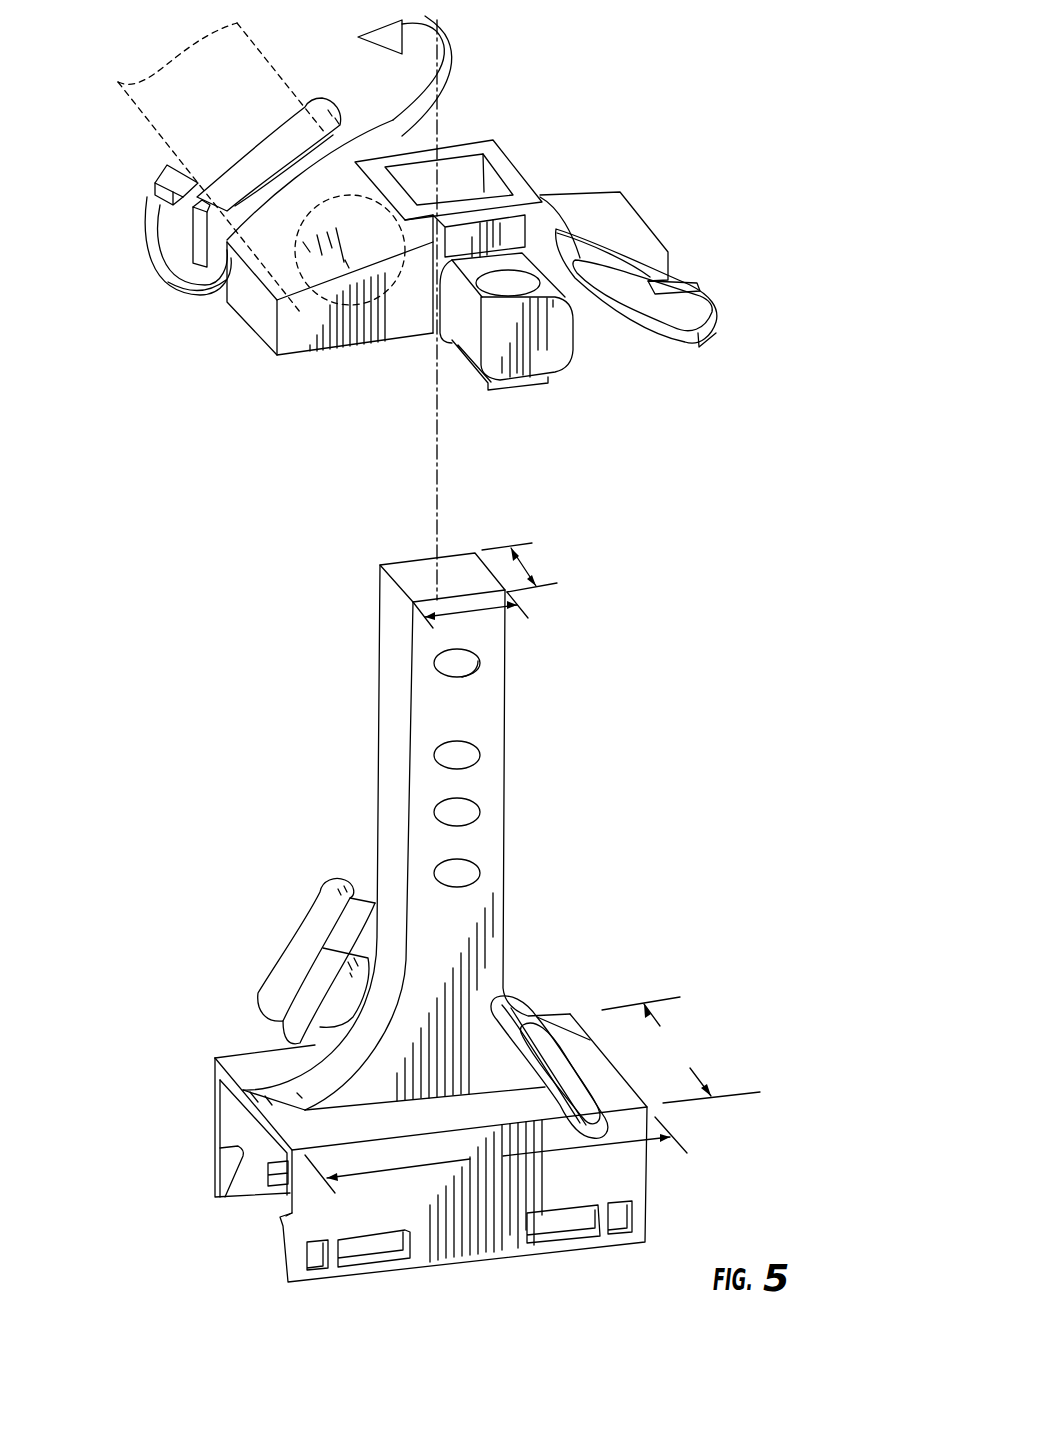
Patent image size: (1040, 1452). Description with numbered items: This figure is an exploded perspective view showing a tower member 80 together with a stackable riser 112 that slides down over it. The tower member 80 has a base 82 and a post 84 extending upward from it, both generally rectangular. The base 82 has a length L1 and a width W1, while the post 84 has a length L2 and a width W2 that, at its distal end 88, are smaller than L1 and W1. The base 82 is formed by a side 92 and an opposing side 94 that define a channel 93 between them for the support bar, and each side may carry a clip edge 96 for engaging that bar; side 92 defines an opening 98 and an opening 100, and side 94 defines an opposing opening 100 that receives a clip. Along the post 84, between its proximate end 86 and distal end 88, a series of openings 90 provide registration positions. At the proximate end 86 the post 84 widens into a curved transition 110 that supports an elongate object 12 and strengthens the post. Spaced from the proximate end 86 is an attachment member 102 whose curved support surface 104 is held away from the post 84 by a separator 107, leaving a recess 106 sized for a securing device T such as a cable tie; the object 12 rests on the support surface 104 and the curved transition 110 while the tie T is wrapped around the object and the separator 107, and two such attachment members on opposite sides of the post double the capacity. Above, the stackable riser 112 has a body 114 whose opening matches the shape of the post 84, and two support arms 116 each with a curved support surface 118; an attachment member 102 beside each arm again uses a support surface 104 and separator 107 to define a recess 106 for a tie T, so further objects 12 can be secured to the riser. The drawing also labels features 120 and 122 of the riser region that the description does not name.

The elongate object 12 is at (175, 55).
The securing device T is at (147, 227).
The tower member 80 is at (299, 742).
The base 82 is at (180, 1130).
The post 84 is at (508, 797).
The proximate end 86 is at (579, 1003).
The distal end 88 is at (404, 551).
The openings 90 is at (477, 663).
The side 92 is at (320, 1220).
The channel 93 is at (233, 1220).
The side 94 is at (214, 1097).
The clip edges 96 is at (243, 1150).
The opening 98 is at (315, 1271).
The opening 100 is at (370, 1257).
The attachment member 102 is at (230, 150).
The support surface 104 is at (300, 112).
The recess 106 is at (208, 281).
The separator 107 is at (302, 182).
The curved transition 110 is at (364, 1058).
The stackable riser 112 is at (576, 86).
The body 114 is at (466, 140).
The support arm 116 is at (260, 270).
The curved support surface 118 is at (380, 241).
The lower housing 120 is at (582, 368).
The housing body 122 is at (462, 320).
The length of base L1 is at (496, 1155).
The length of post L2 is at (474, 614).
The width of base W1 is at (681, 1050).
The width of post W2 is at (539, 578).